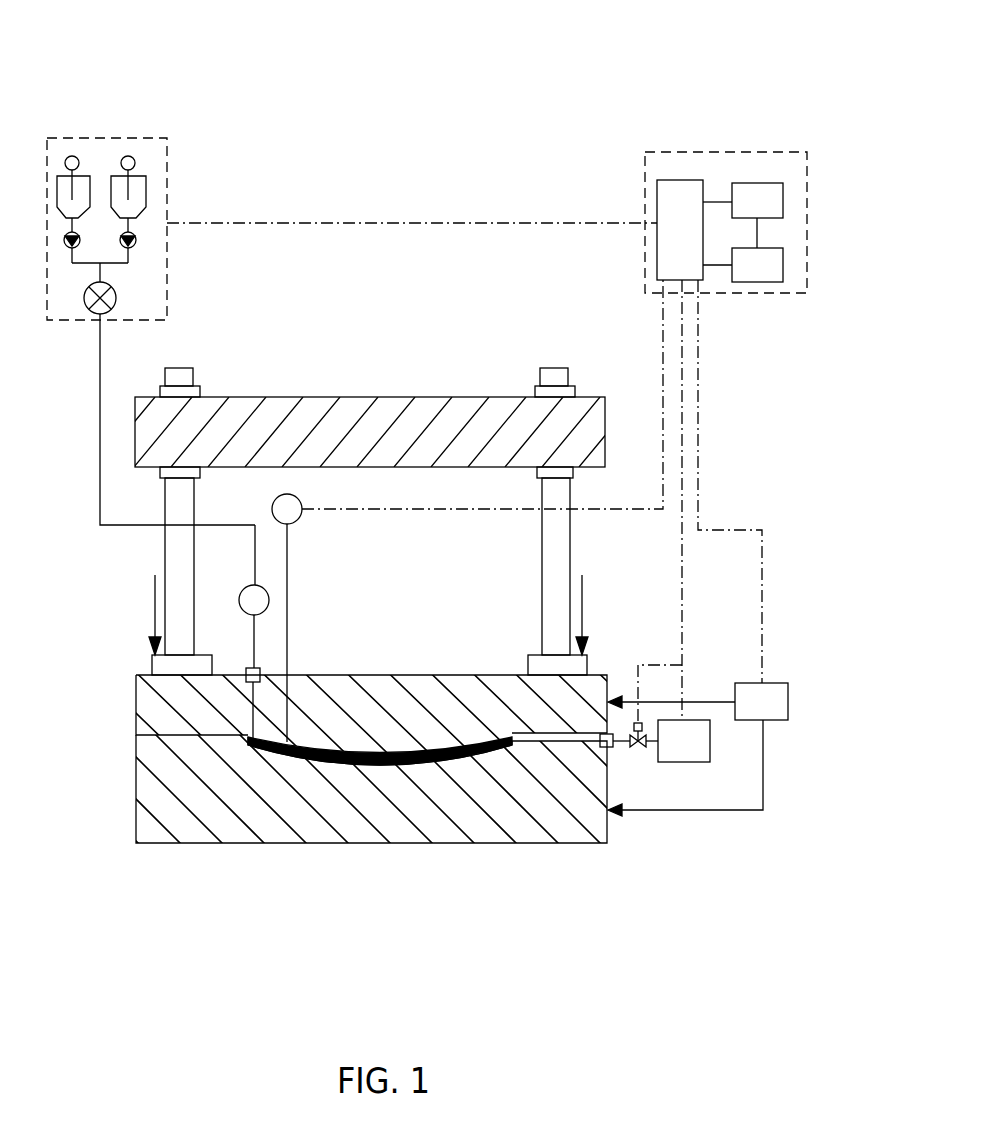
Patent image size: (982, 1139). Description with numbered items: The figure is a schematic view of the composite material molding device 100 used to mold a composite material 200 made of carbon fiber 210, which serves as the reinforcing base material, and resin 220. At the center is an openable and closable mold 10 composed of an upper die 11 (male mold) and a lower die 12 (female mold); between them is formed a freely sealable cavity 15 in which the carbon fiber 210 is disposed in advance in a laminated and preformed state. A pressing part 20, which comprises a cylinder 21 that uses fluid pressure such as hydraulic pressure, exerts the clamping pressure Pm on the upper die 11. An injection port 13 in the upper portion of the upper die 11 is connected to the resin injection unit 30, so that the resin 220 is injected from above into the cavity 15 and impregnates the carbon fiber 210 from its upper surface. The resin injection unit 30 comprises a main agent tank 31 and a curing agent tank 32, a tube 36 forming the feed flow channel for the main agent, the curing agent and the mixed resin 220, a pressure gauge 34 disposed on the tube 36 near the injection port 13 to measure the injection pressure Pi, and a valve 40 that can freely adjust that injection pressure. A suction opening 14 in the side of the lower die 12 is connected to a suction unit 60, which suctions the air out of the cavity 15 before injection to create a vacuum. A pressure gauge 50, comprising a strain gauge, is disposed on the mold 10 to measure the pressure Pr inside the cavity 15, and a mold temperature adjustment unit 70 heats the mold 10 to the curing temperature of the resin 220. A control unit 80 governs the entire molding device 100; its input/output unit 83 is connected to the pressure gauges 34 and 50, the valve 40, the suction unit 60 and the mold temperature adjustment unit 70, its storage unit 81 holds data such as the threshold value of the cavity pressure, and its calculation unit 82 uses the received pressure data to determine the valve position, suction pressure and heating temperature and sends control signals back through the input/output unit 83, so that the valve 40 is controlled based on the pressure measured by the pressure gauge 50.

The molding device 100 is at (82, 36).
The mold 10 is at (73, 695).
The upper die 11 is at (137, 718).
The lower die 12 is at (137, 763).
The injection port 13 is at (246, 670).
The suction opening 14 is at (614, 748).
The cavity 15 is at (470, 762).
The pressing part 20 is at (382, 386).
The cylinder 21 is at (165, 496).
The resin injection unit 30 is at (82, 474).
The main agent tank 31 is at (58, 176).
The curing agent tank 32 is at (113, 176).
The pressure gauge 34 is at (240, 593).
The tube 36 is at (100, 405).
The valve 40 is at (88, 306).
The pressure gauge 50 is at (272, 509).
The suction unit 60 is at (700, 748).
The mold temperature adjustment unit 70 is at (790, 700).
The control unit 80 is at (730, 152).
The storage unit 81 is at (780, 200).
The calculation unit 82 is at (780, 262).
The input/output unit 83 is at (657, 193).
The composite material 200 is at (371, 841).
The carbon fiber 210 is at (325, 764).
The resin 220 is at (258, 762).